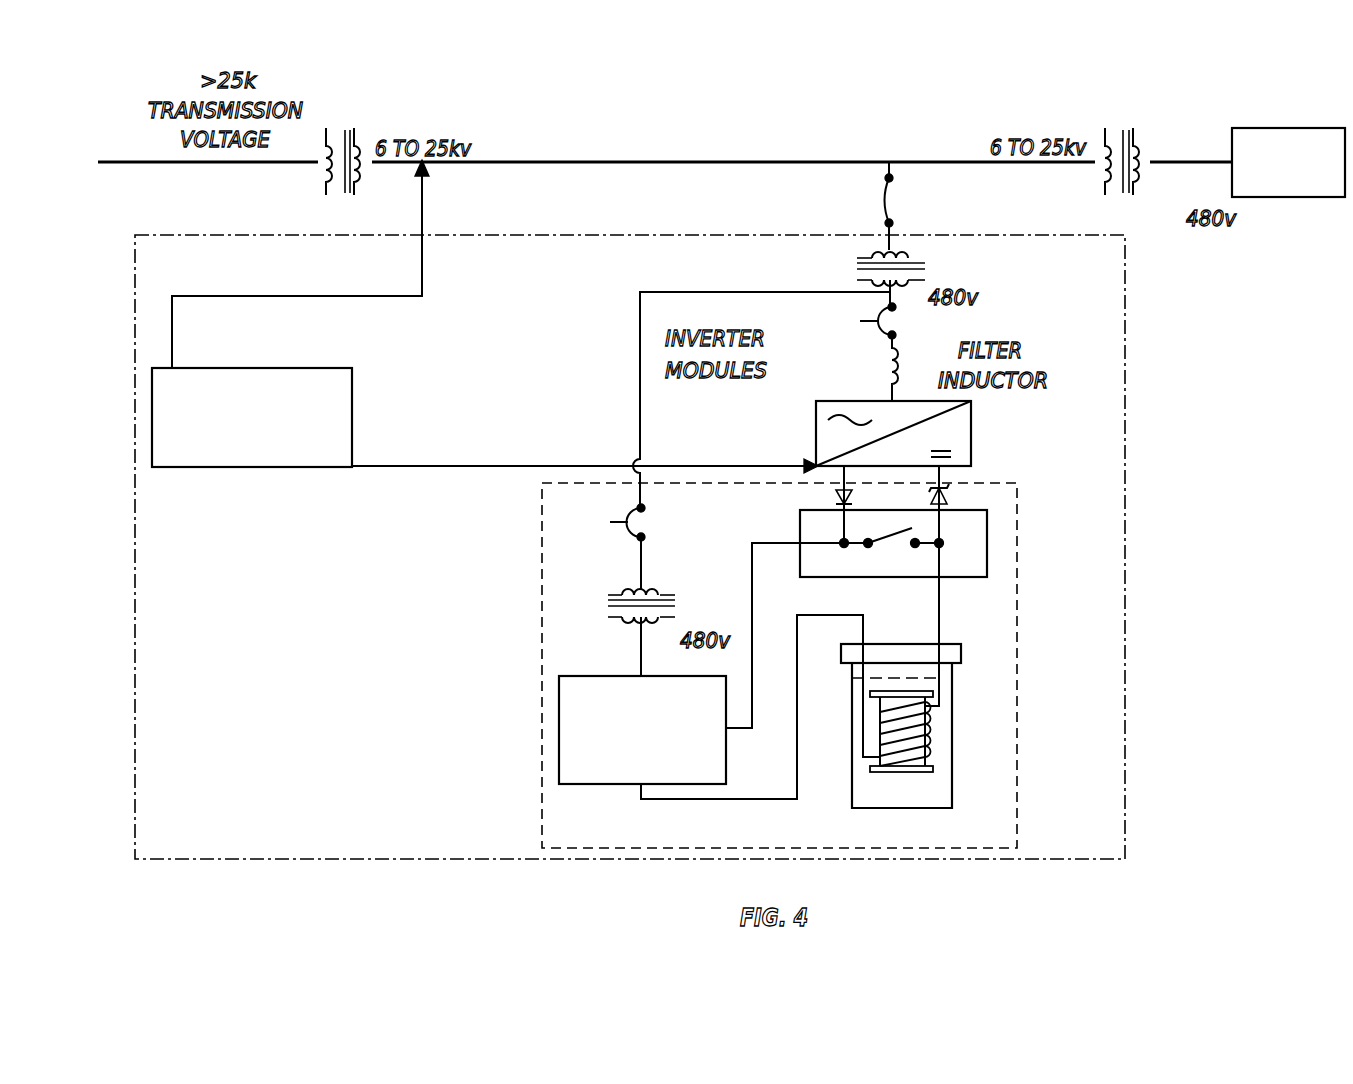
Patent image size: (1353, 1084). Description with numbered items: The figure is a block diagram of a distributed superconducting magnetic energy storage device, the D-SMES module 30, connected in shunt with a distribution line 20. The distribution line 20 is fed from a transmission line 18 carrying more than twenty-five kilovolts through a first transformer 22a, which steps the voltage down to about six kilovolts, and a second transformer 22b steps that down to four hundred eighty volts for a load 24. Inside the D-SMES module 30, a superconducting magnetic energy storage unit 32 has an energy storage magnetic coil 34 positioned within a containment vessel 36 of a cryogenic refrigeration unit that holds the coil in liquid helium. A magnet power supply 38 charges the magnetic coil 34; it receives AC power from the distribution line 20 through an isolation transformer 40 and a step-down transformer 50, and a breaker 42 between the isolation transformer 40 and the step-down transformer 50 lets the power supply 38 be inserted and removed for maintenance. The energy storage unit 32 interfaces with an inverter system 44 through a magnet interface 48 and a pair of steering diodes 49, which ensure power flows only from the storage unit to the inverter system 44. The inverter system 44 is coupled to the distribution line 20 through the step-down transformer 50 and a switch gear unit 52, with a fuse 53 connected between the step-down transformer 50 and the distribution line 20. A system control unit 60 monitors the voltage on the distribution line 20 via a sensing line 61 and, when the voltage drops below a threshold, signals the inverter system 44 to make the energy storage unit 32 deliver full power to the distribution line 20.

The transmission line 18 is at (158, 162).
The distribution line 20 is at (975, 162).
The first transformer 22a is at (346, 128).
The second transformer 22b is at (1126, 128).
The load 24 is at (1285, 197).
The D-SMES module 30 is at (177, 848).
The superconducting magnetic energy storage unit 32 is at (955, 696).
The energy storage magnetic coil 34 is at (880, 740).
The containment vessel 36 is at (900, 747).
The magnet power supply 38 is at (612, 786).
The isolation transformer 40 is at (610, 600).
The breaker 42 is at (645, 528).
The inverter system 44 is at (971, 432).
The magnet interface 48 is at (987, 510).
The steering diodes 49 is at (838, 495).
The step-down transformer 50 is at (925, 264).
The switch gear unit 52 is at (890, 326).
The fuse 53 is at (882, 196).
The system control unit 60 is at (238, 468).
The sensing line 61 is at (396, 302).